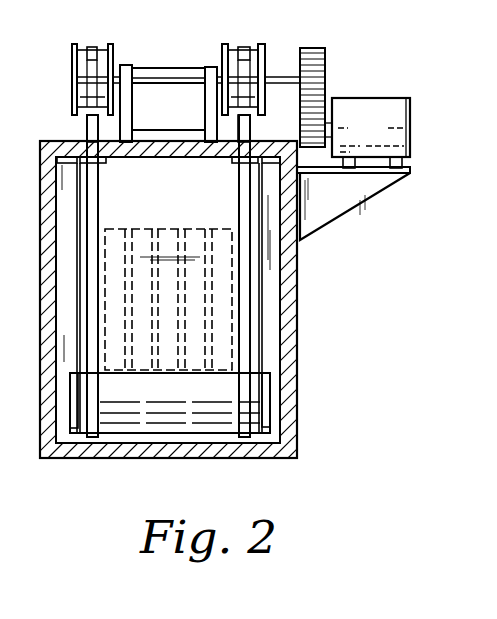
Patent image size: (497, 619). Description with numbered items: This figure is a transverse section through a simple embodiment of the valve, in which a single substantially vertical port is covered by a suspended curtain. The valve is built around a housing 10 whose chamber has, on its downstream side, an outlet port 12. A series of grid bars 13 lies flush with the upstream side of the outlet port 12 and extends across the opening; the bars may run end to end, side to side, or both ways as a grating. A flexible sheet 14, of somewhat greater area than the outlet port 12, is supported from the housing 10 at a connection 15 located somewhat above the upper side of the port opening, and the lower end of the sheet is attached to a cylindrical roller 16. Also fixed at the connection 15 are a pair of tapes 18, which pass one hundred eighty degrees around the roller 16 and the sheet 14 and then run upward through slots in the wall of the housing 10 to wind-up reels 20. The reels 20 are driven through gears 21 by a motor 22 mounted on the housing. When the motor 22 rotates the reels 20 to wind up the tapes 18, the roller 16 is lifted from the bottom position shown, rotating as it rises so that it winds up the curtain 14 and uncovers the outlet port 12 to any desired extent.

The housing 10 is at (297, 285).
The outlet port 12 is at (138, 228).
The grid bars 13 is at (207, 237).
The flexible sheet 14 is at (75, 260).
The connection 15 is at (72, 160).
The cylindrical roller 16 is at (70, 405).
The tapes 18 is at (92, 330).
The wind-up reels 20 is at (71, 80).
The gears 21 is at (325, 72).
The motor 22 is at (384, 139).